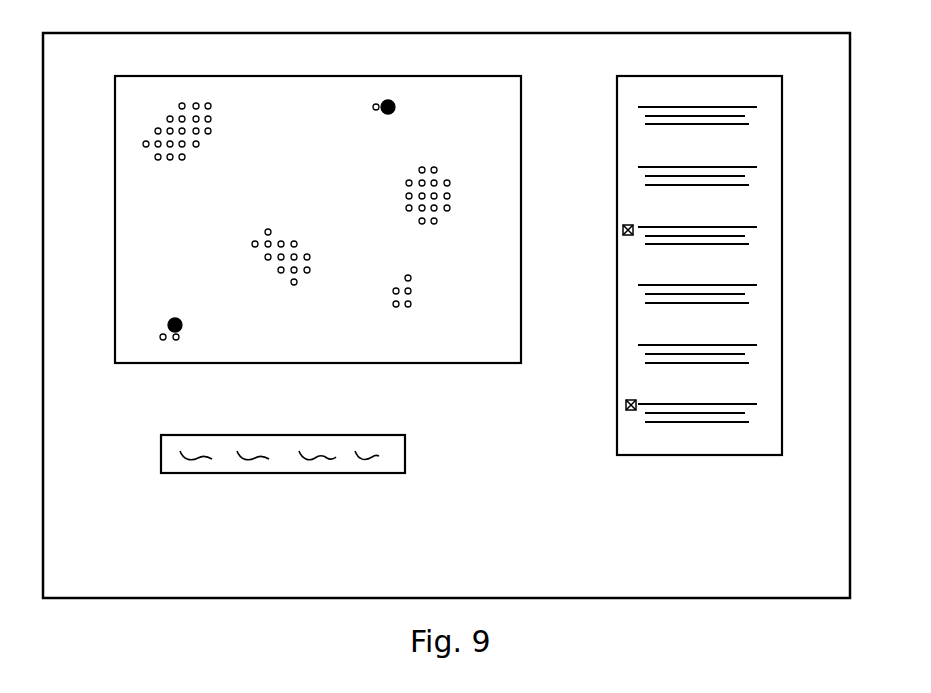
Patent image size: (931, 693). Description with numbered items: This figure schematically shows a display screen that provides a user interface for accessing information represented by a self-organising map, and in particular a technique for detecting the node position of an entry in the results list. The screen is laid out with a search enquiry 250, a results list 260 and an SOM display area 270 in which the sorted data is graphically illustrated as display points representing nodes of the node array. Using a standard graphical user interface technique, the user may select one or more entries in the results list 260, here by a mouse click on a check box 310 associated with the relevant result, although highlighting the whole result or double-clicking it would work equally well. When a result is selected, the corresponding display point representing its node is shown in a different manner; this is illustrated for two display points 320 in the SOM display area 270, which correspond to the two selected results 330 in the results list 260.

The search enquiry 250 is at (405, 452).
The results list 260 is at (617, 432).
The SOM display area 270 is at (522, 337).
The check box 310 is at (626, 405).
The display point 320 is at (395, 105).
The selected result 330 is at (754, 237).